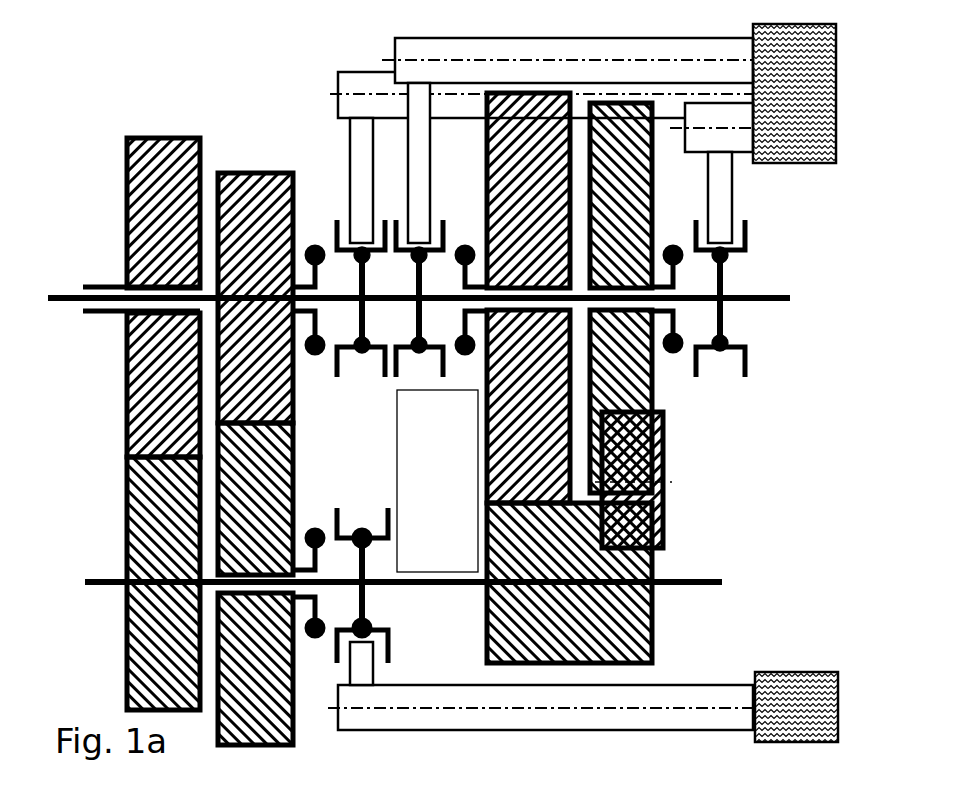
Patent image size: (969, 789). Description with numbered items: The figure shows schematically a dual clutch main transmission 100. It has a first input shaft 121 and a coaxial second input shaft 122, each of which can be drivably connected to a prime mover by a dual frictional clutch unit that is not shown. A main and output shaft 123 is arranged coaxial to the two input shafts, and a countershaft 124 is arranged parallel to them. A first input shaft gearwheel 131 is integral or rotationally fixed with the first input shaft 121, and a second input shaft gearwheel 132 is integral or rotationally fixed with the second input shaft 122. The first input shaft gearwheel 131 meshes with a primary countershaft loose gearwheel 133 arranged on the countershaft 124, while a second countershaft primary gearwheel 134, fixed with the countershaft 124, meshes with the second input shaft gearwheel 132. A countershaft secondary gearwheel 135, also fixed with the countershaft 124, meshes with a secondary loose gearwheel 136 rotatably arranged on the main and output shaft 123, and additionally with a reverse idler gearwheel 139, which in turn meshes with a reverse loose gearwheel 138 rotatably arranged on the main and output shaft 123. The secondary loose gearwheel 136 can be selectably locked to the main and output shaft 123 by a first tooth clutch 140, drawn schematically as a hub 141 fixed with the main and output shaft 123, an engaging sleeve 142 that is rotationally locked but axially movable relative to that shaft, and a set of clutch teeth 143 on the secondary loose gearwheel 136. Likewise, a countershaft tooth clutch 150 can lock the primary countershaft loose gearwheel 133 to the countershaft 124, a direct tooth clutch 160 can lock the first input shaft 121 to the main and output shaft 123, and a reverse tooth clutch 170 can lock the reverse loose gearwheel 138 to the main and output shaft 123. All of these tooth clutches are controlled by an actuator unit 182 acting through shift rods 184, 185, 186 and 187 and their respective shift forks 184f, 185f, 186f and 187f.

The dual clutch main transmission 100 is at (141, 96).
The first input shaft 121 is at (72, 294).
The second input shaft 122 is at (90, 314).
The main and output shaft 123 is at (758, 303).
The countershaft 124 is at (90, 579).
The first input shaft gearwheel 131 is at (255, 374).
The second input shaft gearwheel 132 is at (126, 152).
The primary countershaft loose gearwheel 133 is at (255, 669).
The second countershaft primary gearwheel 134 is at (126, 652).
The countershaft secondary gearwheel 135 is at (569, 583).
The secondary loose gearwheel 136 is at (528, 298).
The reverse loose gearwheel 138 is at (621, 401).
The reverse idler gearwheel 139 is at (666, 525).
The first tooth clutch 140 is at (437, 481).
The hub 141 is at (413, 320).
The engaging sleeve 142 is at (400, 378).
The clutch teeth 143 is at (466, 356).
The countershaft tooth clutch 150 is at (385, 373).
The direct tooth clutch 160 is at (326, 367).
The reverse tooth clutch 170 is at (699, 391).
The actuator unit 182 is at (795, 383).
The shift rod 184 is at (395, 48).
The shift fork 184f is at (426, 107).
The shift rod 185 is at (688, 683).
The shift fork 185f is at (376, 672).
The shift rod 186 is at (338, 81).
The shift fork 186f is at (350, 150).
The shift rod 187 is at (746, 154).
The shift fork 187f is at (724, 188).